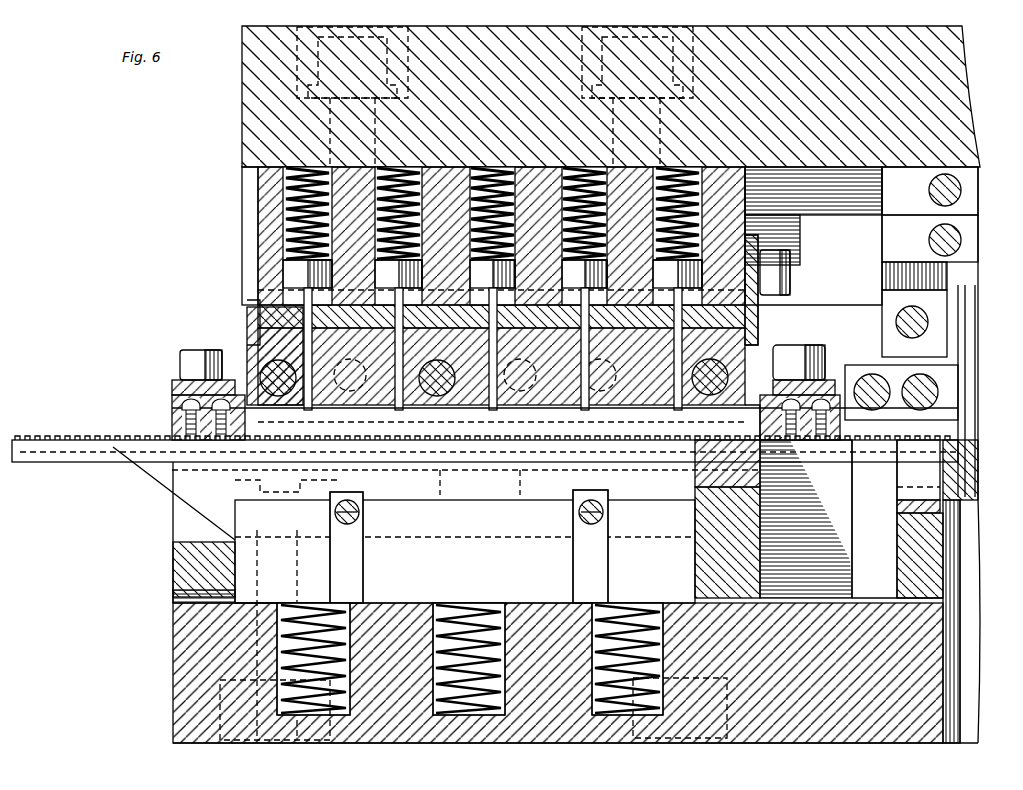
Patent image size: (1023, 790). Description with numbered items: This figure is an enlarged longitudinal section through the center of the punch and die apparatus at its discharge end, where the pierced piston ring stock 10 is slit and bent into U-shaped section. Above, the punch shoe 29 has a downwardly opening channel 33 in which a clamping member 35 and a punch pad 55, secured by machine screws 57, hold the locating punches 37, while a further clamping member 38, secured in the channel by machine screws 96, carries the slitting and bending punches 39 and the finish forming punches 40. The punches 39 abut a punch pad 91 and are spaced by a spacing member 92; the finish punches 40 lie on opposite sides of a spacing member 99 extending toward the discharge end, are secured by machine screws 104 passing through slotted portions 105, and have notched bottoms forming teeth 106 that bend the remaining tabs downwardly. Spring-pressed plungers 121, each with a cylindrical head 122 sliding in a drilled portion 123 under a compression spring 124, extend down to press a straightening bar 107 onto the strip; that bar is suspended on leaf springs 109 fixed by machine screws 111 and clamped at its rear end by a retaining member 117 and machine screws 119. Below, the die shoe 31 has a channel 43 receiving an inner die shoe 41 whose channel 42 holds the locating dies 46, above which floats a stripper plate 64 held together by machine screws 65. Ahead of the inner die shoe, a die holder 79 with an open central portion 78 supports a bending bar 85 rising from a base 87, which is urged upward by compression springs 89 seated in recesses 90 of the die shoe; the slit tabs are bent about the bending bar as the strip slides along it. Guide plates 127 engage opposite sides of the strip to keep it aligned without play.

The piston ring stock 10 is at (85, 468).
The punch shoe 29 is at (962, 125).
The die shoe 31 is at (178, 657).
The channel 33 is at (835, 250).
The clamping member 35 is at (890, 312).
The locating punches 37 is at (965, 330).
The clamping member 38 is at (262, 238).
The slitting and bending punches 39 is at (515, 470).
The finish forming punches 40 is at (205, 343).
The inner die shoe 41 is at (900, 560).
The channel 42 is at (897, 494).
The channel 43 is at (870, 598).
The locating dies 46 is at (970, 515).
The punch pad 55 is at (895, 280).
The machine screws 57 is at (962, 238).
The stripper plate 64 is at (860, 375).
The machine screws 65 is at (896, 389).
The open central portion 78 is at (235, 580).
The die holder 79 is at (178, 571).
The bending bar 85 is at (175, 505).
The base 87 is at (260, 600).
The compression springs 89 is at (295, 712).
The recesses 90 is at (350, 700).
The punch pad 91 is at (775, 297).
The spacing member 92 is at (735, 350).
The machine screws 96 is at (405, 50).
The spacing member 99 is at (262, 340).
The machine screws 104 is at (252, 320).
The slotted portions 105 is at (265, 365).
The teeth 106 is at (300, 495).
The straightening bar 107 is at (748, 420).
The leaf springs 109 is at (172, 410).
The machine screws 111 is at (172, 386).
The retaining member 117 is at (800, 348).
The machine screws 119 is at (820, 350).
The spring-pressed plungers 121 is at (310, 415).
The cylindrical head 122 is at (285, 270).
The drilled portion 123 is at (290, 180).
The compression springs 124 is at (300, 200).
The guide plates 127 is at (890, 452).